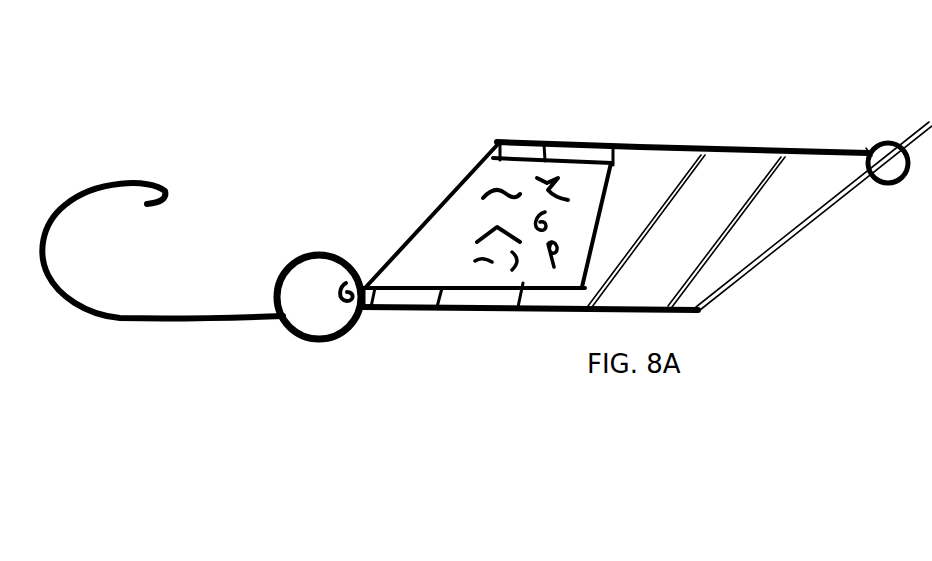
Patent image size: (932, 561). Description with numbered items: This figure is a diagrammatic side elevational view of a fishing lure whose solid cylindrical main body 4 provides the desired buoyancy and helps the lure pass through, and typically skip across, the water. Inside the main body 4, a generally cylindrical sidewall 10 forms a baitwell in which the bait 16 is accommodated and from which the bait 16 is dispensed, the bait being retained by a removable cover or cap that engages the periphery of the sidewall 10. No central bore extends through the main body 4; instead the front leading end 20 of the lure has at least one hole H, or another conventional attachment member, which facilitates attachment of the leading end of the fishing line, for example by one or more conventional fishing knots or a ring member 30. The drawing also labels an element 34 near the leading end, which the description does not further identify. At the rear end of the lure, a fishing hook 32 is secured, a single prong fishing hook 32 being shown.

The main body 4 is at (653, 143).
The cylindrical sidewall 10 is at (522, 140).
The bait 16 is at (548, 176).
The front leading end 20 is at (885, 214).
The ring member 30 is at (338, 262).
The fishing hook 32 is at (185, 322).
The ring 34 is at (931, 121).
The hole H is at (869, 146).